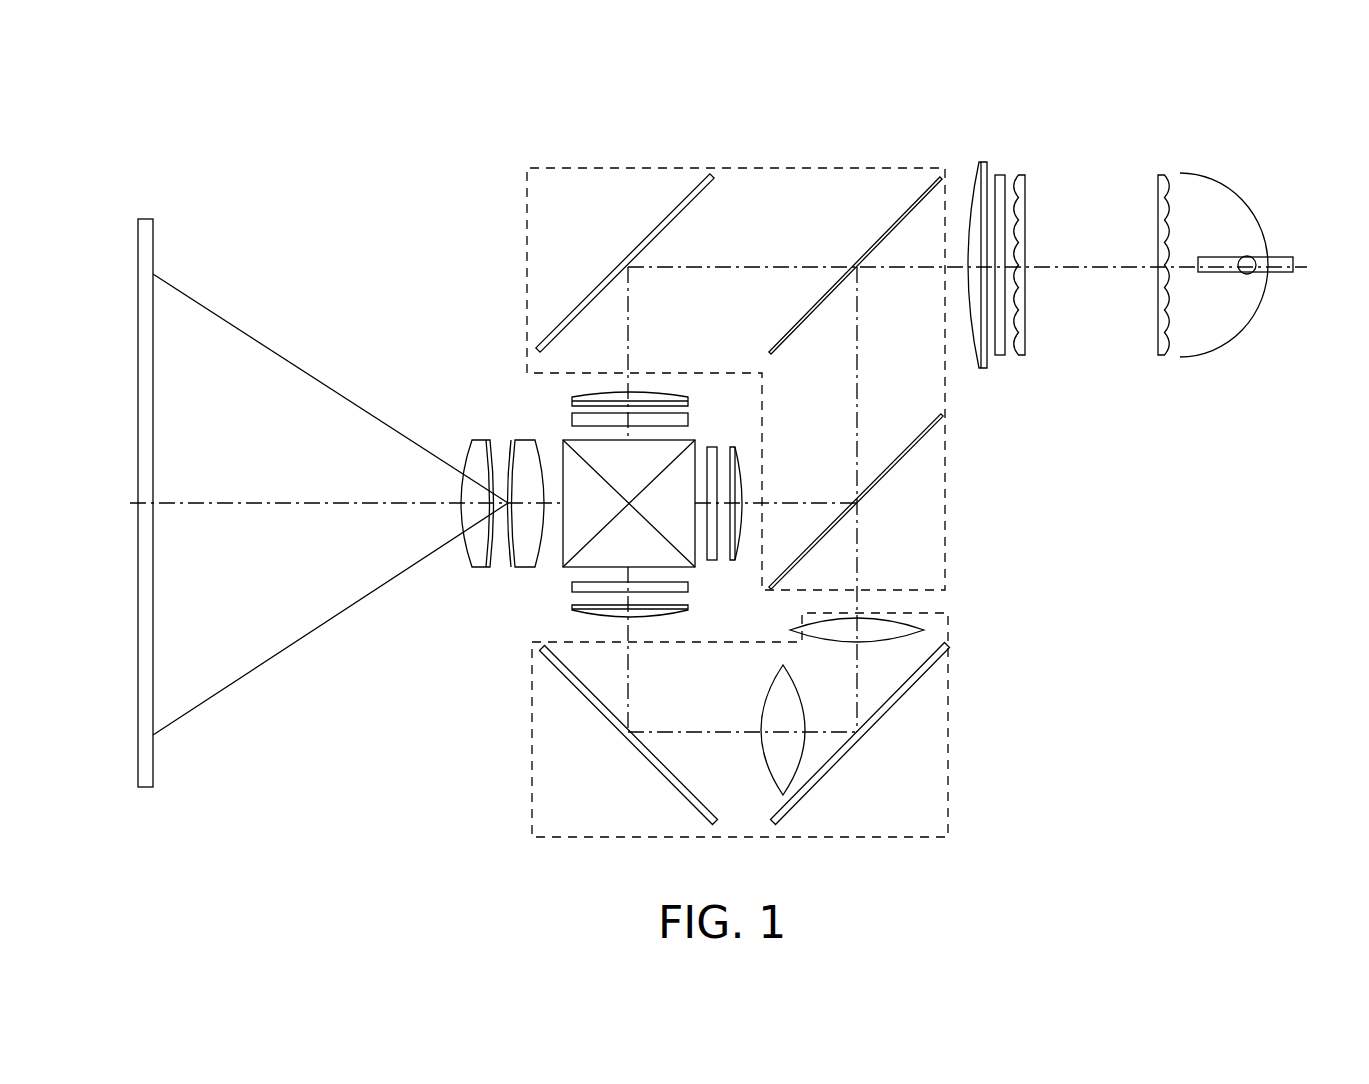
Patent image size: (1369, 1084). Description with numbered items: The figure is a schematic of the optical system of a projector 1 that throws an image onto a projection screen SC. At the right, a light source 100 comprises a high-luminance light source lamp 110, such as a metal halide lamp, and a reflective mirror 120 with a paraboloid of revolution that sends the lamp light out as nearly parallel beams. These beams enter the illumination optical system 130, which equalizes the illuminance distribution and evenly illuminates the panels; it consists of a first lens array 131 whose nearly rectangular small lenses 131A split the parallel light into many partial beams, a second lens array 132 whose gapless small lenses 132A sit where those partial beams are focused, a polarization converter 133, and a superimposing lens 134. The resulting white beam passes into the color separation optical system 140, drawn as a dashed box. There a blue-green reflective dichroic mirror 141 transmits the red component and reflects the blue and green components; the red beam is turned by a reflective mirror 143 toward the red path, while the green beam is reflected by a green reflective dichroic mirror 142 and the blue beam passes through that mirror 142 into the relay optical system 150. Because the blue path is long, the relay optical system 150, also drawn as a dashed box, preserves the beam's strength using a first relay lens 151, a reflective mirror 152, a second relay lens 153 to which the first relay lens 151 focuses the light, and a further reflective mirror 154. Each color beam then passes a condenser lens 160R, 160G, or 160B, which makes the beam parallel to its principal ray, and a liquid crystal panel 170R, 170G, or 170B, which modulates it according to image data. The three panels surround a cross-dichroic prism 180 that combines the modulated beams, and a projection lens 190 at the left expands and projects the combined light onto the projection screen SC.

The projector 1 is at (362, 255).
The projection screen SC is at (155, 692).
The light source 100 is at (1246, 212).
The light source lamp 110 is at (1247, 257).
The reflective mirror 120 is at (1258, 228).
The illumination optical system 130 is at (1069, 268).
The first lens array 131 is at (1138, 312).
The small lens 131A is at (1157, 313).
The second lens array 132 is at (1056, 300).
The small lens 132A is at (1020, 314).
The polarization converter 133 is at (1000, 357).
The superimposing lens 134 is at (975, 370).
The color separation optical system 140 is at (736, 338).
The blue-green reflective dichroic mirror 141 is at (893, 225).
The green reflective dichroic mirror 142 is at (907, 448).
The reflective mirror 143 is at (627, 253).
The relay optical system 150 is at (790, 710).
The first relay lens 151 is at (920, 625).
The reflective mirror 152 is at (925, 675).
The second relay lens 153 is at (758, 758).
The reflective mirror 154 is at (640, 750).
The condenser lens 160R is at (652, 387).
The condenser lens 160G is at (745, 455).
The condenser lens 160B is at (683, 607).
The liquid crystal panel 170R is at (572, 418).
The liquid crystal panel 170G is at (718, 458).
The liquid crystal panel 170B is at (580, 590).
The cross-dichroic prism 180 is at (568, 567).
The projection lens 190 is at (549, 435).